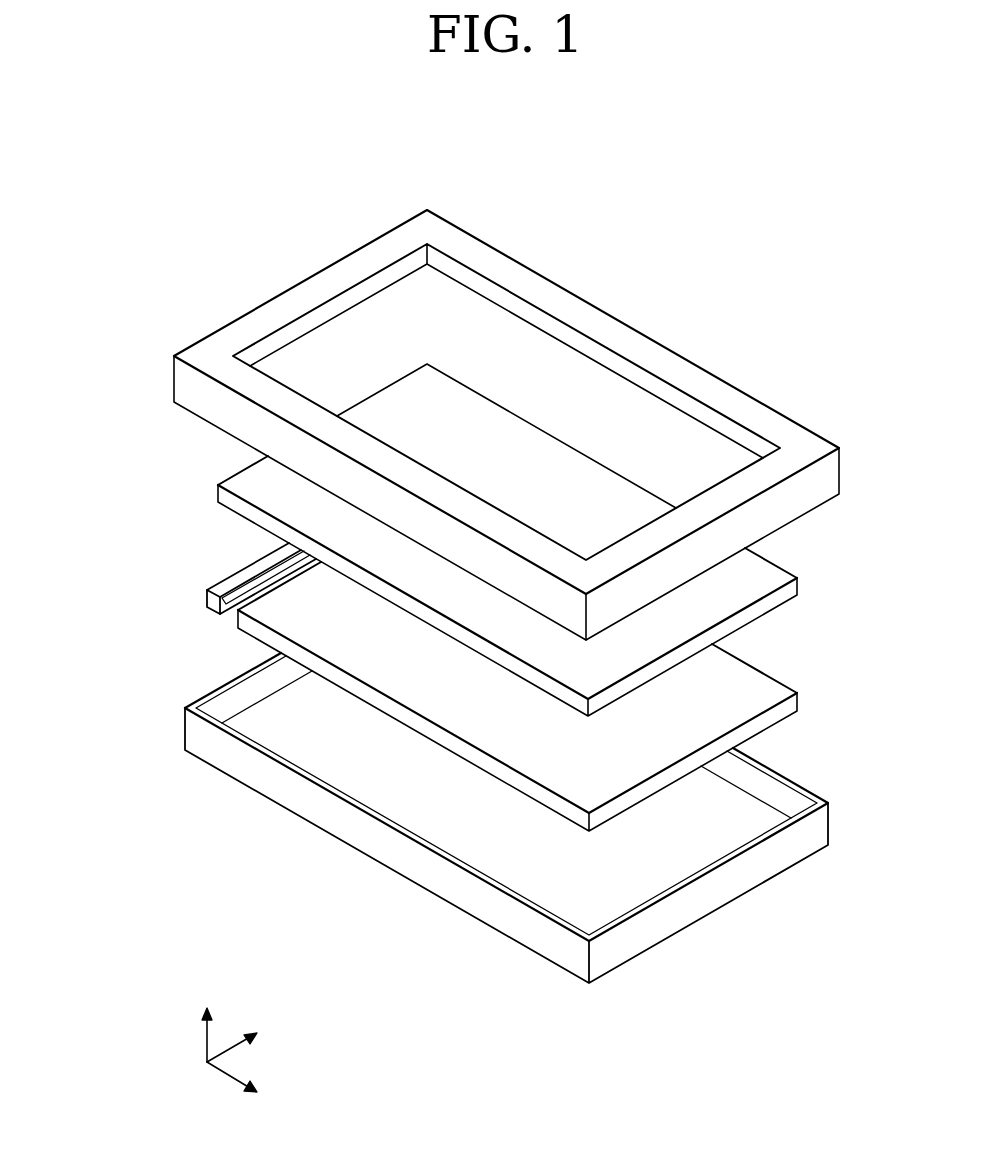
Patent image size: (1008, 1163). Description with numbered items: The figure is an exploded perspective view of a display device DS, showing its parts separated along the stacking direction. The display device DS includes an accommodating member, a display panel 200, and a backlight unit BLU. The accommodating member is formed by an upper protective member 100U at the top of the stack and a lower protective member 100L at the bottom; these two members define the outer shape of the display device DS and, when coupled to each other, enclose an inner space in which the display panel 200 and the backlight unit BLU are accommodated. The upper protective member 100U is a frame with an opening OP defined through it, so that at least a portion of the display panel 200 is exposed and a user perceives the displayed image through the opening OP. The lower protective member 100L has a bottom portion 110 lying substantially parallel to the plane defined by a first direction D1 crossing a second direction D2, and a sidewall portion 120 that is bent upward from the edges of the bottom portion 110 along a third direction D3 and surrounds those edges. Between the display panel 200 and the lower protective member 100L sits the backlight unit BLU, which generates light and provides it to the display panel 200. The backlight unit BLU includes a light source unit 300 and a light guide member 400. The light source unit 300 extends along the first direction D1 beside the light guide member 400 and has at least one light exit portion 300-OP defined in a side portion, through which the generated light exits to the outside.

The display device DS is at (731, 220).
The upper protective member 100U is at (702, 382).
The opening OP is at (587, 348).
The display panel 200 is at (790, 592).
The backlight unit BLU is at (108, 592).
The light source unit 300 is at (206, 600).
The light exit portion 300-OP is at (240, 592).
The light guide member 400 is at (245, 622).
The lower protective member 100L is at (843, 922).
The bottom portion 110 is at (643, 880).
The sidewall portion 120 is at (752, 870).
The first direction D1 is at (245, 1034).
The second direction D2 is at (250, 1088).
The third direction D3 is at (212, 1021).